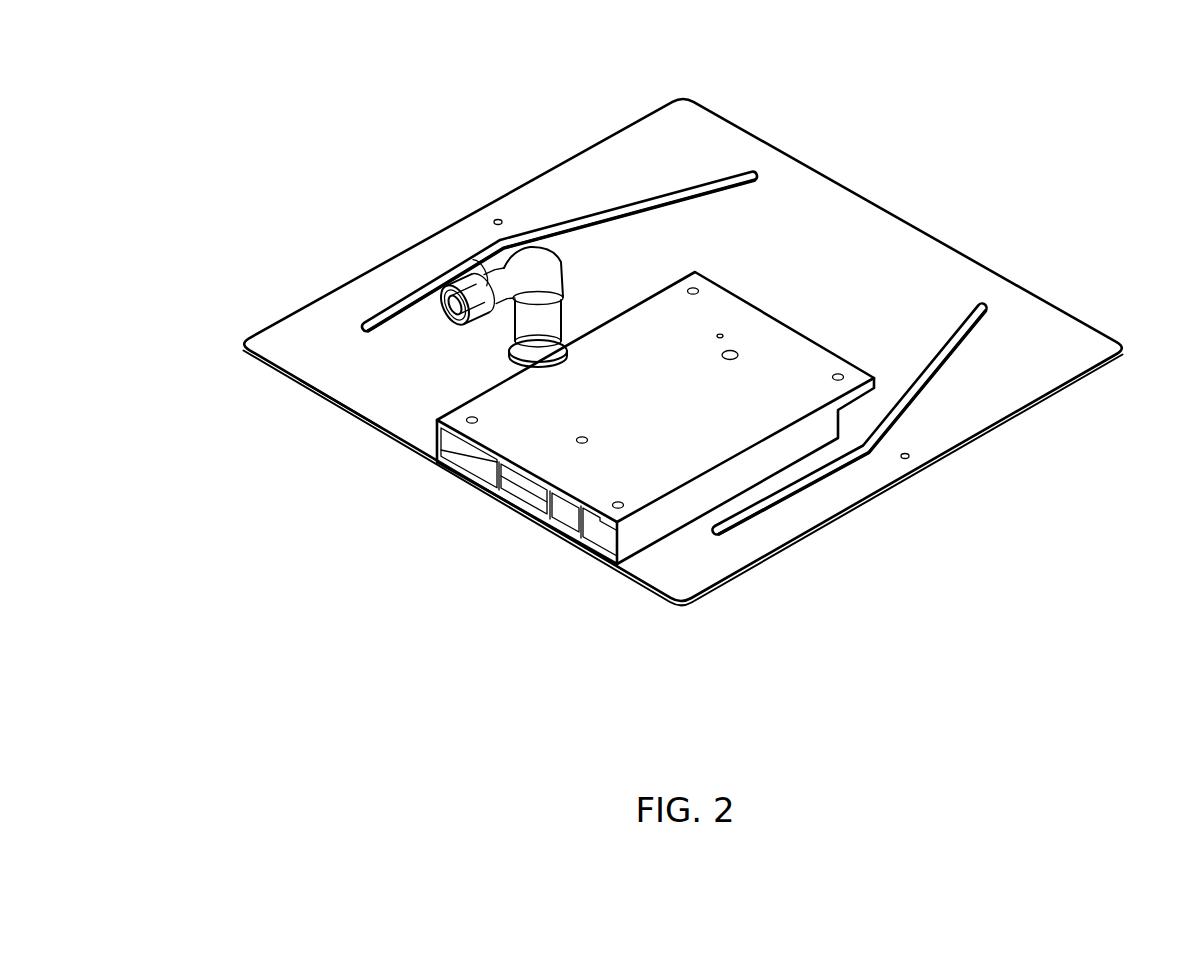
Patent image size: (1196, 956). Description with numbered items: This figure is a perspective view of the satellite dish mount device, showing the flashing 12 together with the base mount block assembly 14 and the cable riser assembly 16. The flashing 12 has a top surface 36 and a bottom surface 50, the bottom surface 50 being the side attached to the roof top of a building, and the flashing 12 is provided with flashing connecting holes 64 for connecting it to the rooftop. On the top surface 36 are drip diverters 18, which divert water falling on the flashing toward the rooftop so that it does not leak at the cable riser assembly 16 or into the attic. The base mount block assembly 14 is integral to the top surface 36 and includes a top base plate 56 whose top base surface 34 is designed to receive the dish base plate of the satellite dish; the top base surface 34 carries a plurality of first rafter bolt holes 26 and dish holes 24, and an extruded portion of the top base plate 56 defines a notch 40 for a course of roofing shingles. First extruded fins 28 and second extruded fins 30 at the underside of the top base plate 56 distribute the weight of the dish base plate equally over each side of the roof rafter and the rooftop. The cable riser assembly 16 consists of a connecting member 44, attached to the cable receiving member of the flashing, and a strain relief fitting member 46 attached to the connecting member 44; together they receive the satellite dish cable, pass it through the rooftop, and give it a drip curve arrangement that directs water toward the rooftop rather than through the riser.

The flashing 12 is at (1122, 353).
The base mount block assembly 14 is at (717, 387).
The cable riser assembly 16 is at (454, 232).
The drip diverters 18 is at (658, 200).
The dish holes 24 is at (840, 372).
The first rafter bolt holes 26 is at (717, 333).
The first extruded fins 28 is at (435, 463).
The second extruded fins 30 is at (483, 488).
The top base surface 34 is at (655, 398).
The top surface 36 is at (1024, 365).
The notch 40 is at (840, 413).
The connecting member 44 is at (533, 257).
The strain relief fitting member 46 is at (470, 283).
The bottom surface 50 is at (382, 430).
The top base plate 56 is at (733, 345).
The flashing connecting holes 64 is at (910, 457).